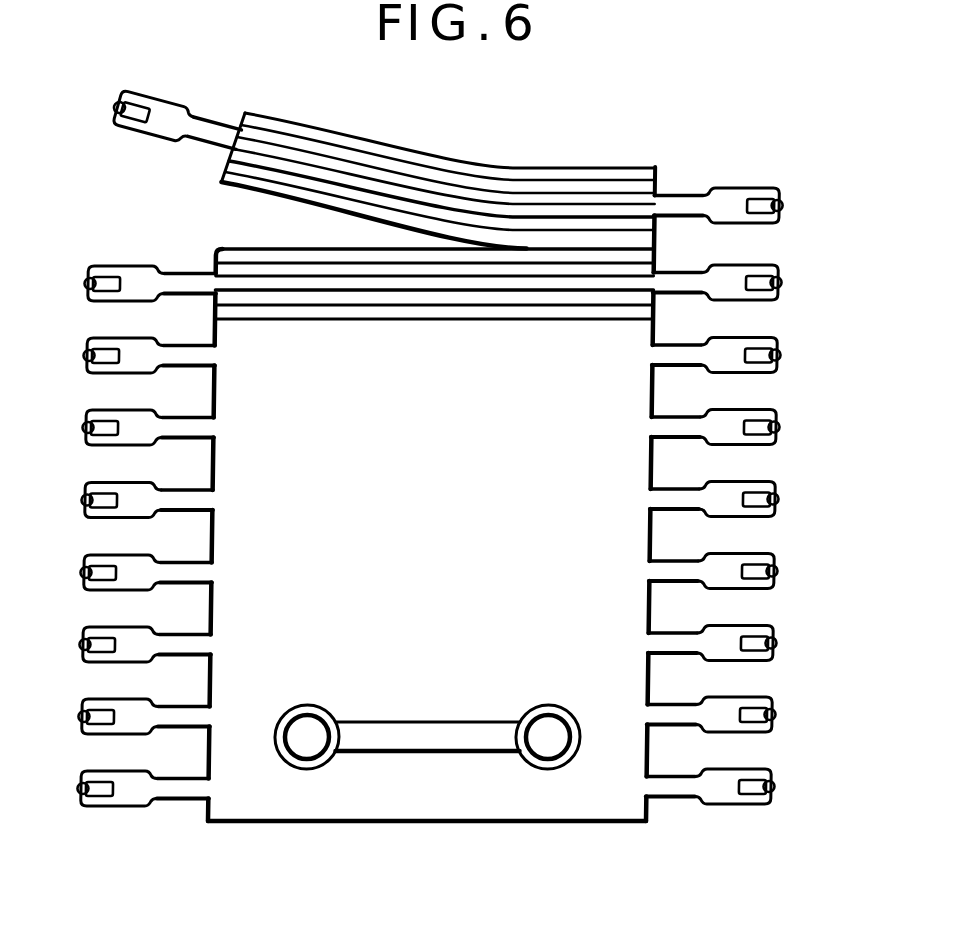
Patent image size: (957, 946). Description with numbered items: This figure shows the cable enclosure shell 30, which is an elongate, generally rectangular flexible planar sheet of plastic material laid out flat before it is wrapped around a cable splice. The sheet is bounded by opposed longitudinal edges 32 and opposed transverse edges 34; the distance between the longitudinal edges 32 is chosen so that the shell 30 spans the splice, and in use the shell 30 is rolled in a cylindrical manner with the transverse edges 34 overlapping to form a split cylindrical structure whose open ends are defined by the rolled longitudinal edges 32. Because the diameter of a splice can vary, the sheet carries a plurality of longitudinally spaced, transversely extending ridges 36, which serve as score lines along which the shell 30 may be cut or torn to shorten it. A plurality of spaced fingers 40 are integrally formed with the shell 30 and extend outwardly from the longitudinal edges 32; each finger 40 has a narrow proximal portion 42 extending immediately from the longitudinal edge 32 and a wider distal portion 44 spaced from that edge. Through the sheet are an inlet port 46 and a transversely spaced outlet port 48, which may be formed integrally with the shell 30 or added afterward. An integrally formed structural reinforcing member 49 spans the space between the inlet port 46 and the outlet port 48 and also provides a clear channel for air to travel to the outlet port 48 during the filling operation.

The cable enclosure shell 30 is at (799, 777).
The longitudinal edges 32 is at (220, 381).
The transverse edges 34 is at (577, 162).
The ridges 36 is at (641, 244).
The fingers 40 is at (168, 562).
The proximal portion 42 is at (172, 640).
The distal portion 44 is at (131, 777).
The inlet port 46 is at (305, 748).
The outlet port 48 is at (548, 750).
The structural reinforcing member 49 is at (427, 745).